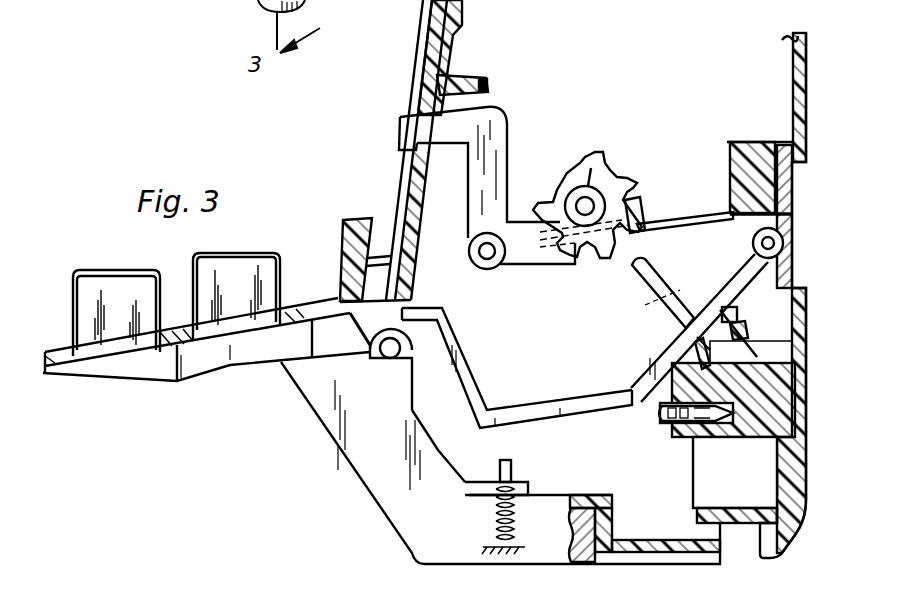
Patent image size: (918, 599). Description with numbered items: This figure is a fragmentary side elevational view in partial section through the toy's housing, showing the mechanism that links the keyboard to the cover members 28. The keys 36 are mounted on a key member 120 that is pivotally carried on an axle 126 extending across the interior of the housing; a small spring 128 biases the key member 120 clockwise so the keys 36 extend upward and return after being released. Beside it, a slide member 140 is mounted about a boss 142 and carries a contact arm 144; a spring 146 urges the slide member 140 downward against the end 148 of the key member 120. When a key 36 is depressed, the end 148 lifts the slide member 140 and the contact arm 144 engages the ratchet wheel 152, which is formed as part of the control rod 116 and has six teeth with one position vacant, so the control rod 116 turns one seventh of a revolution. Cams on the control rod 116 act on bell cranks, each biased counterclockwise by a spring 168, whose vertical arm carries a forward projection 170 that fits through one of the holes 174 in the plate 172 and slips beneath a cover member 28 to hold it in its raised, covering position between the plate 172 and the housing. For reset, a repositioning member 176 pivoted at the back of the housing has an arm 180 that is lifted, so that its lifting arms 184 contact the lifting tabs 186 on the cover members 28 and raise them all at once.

The cover member 28 is at (418, 50).
The keys 36 is at (103, 270).
The control rod 116 is at (607, 172).
The key member 120 is at (382, 480).
The axle 126 is at (392, 361).
The spring 128 is at (513, 518).
The slide member 140 is at (640, 410).
The boss 142 is at (727, 440).
The contact arm 144 is at (657, 293).
The spring 146 is at (750, 348).
The end of key member 148 is at (707, 533).
The ratchet wheel 152 is at (548, 195).
The spring 168 is at (688, 201).
The forward projection 170 is at (423, 125).
The plate 172 is at (460, 40).
The holes 174 is at (448, 110).
The repositioning member 176 is at (550, 380).
The arm 180 is at (723, 271).
The lifting arms 184 is at (420, 307).
The lifting tab 186 is at (408, 140).